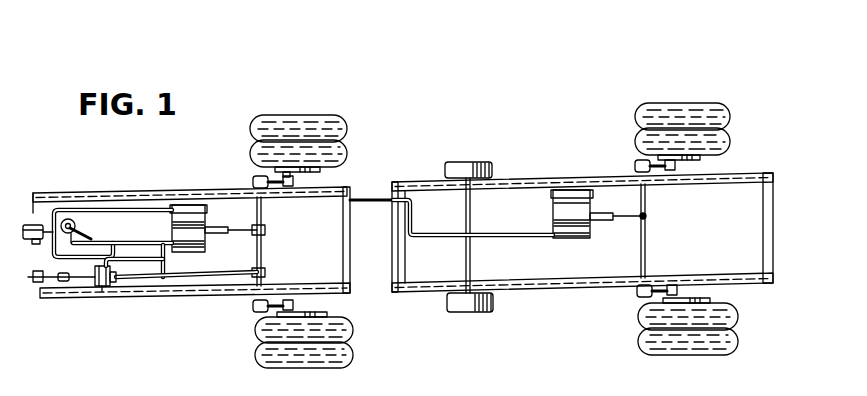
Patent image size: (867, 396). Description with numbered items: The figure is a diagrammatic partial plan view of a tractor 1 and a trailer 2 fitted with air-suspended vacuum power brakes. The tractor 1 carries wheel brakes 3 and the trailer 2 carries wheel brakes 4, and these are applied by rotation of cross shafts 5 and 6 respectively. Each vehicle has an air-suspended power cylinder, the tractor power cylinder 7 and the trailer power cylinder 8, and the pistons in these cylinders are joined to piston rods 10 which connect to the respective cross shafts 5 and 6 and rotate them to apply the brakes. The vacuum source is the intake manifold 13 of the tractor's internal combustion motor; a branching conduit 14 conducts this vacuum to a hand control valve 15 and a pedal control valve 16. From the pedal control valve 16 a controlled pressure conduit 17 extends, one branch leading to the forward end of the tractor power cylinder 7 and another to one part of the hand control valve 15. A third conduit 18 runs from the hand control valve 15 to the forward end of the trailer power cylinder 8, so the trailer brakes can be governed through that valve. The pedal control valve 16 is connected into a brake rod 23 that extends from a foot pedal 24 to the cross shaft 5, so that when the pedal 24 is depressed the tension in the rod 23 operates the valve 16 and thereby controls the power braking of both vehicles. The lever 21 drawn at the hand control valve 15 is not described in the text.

The tractor 1 is at (150, 188).
The trailer 2 is at (538, 181).
The wheel brakes 3 is at (327, 172).
The wheel brakes 4 is at (700, 158).
The cross shaft 5 is at (265, 252).
The cross shaft 6 is at (646, 243).
The power cylinder 7 is at (190, 213).
The power cylinder 8 is at (572, 200).
The piston rods 10 is at (246, 231).
The intake manifold 13 is at (41, 223).
The branching conduit 14 is at (52, 257).
The hand control valve 15 is at (72, 220).
The pedal control valve 16 is at (101, 288).
The controlled pressure conduit 17 is at (161, 260).
The third conduit 18 is at (378, 198).
The valve lever 21 is at (91, 237).
The brake rod 23 is at (82, 281).
The foot pedal 24 is at (42, 284).